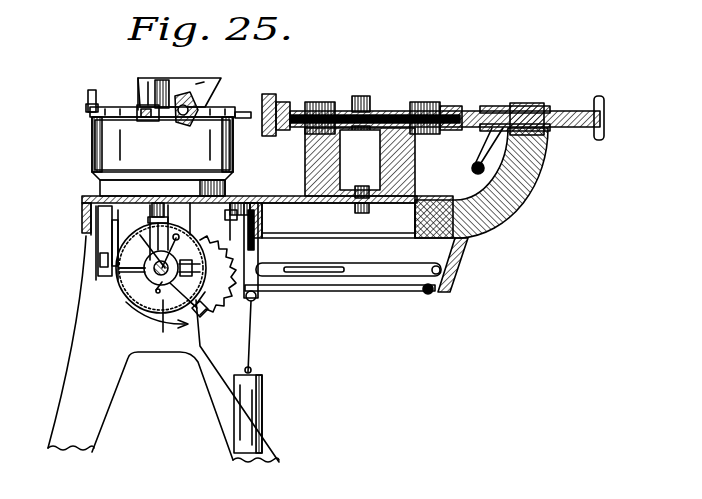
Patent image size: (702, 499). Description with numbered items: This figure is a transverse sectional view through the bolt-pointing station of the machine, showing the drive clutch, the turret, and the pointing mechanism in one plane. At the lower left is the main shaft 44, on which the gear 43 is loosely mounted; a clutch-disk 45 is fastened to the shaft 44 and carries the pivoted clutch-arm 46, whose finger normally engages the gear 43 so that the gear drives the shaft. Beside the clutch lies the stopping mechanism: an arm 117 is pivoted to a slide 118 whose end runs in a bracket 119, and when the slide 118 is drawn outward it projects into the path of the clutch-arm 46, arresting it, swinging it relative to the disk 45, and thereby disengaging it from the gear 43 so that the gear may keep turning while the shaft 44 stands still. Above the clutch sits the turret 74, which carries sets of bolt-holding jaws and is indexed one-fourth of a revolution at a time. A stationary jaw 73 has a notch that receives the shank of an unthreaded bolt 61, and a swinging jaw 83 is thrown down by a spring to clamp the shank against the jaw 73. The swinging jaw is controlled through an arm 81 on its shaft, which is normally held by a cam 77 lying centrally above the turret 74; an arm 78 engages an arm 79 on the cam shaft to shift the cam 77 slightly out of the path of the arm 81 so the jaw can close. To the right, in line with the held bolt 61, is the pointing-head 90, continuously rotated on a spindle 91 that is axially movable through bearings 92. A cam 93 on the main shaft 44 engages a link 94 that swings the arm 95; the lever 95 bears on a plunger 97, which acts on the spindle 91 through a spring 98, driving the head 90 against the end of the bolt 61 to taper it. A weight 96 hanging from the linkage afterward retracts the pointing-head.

The gear 43 is at (205, 312).
The main shaft 44 is at (140, 280).
The clutch-disk 45 is at (157, 324).
The clutch-arm 46 is at (280, 231).
The bolt 61 is at (250, 120).
The stationary jaw 73 is at (146, 112).
The turret 74 is at (162, 151).
The cam 77 is at (178, 84).
The arm 78 is at (176, 250).
The arm 79 is at (114, 247).
The arm 81 is at (150, 104).
The swinging jaw 83 is at (88, 98).
The pointing-head 90 is at (266, 102).
The spindle 91 is at (378, 108).
The bearings 92 is at (318, 102).
The cam 93 is at (140, 272).
The link 94 is at (348, 276).
The arm 95 is at (474, 242).
The weight 96 is at (265, 430).
The plunger 97 is at (470, 124).
The spring 98 is at (436, 128).
The arm 117 is at (163, 252).
The slide 118 is at (99, 262).
The bracket 119 is at (99, 215).